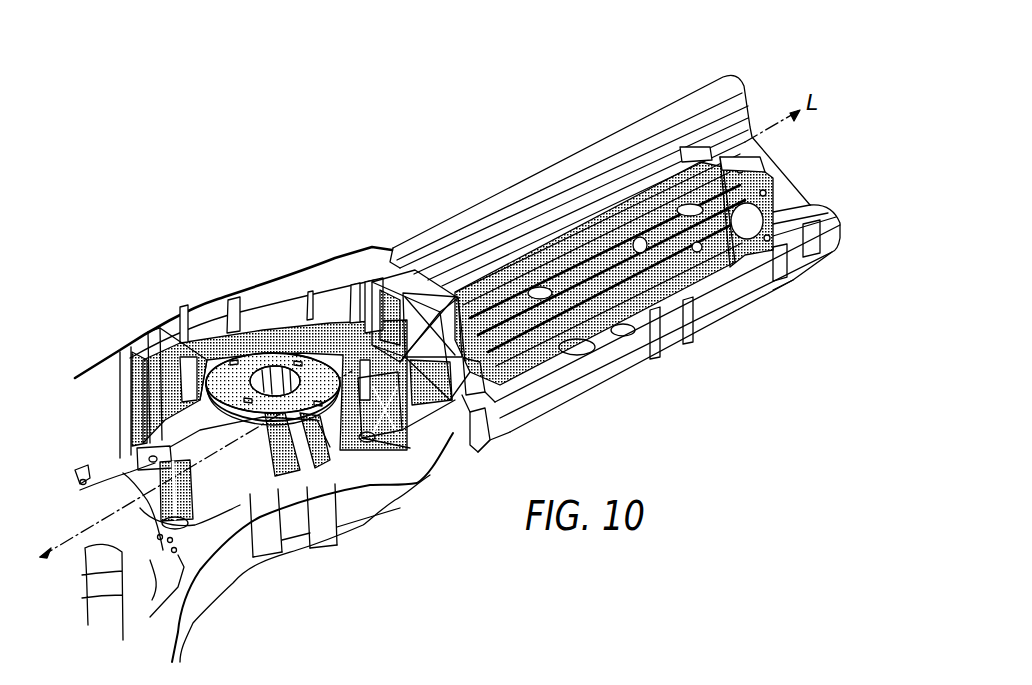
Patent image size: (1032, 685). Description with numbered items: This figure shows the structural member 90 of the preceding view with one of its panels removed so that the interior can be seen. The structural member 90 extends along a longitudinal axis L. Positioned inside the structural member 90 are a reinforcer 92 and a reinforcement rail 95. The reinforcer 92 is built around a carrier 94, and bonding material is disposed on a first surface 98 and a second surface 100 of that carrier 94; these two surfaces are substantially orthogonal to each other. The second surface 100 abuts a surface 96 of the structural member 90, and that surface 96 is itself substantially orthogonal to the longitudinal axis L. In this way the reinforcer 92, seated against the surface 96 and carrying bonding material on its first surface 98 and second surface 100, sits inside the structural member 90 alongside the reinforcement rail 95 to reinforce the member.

The structural member 90 is at (690, 95).
The reinforcer 92 is at (390, 283).
The carrier 94 is at (483, 410).
The reinforcement rail 95 is at (755, 203).
The surface of the structural member 96 is at (474, 428).
The first surface 98 is at (446, 296).
The second surface 100 is at (424, 440).